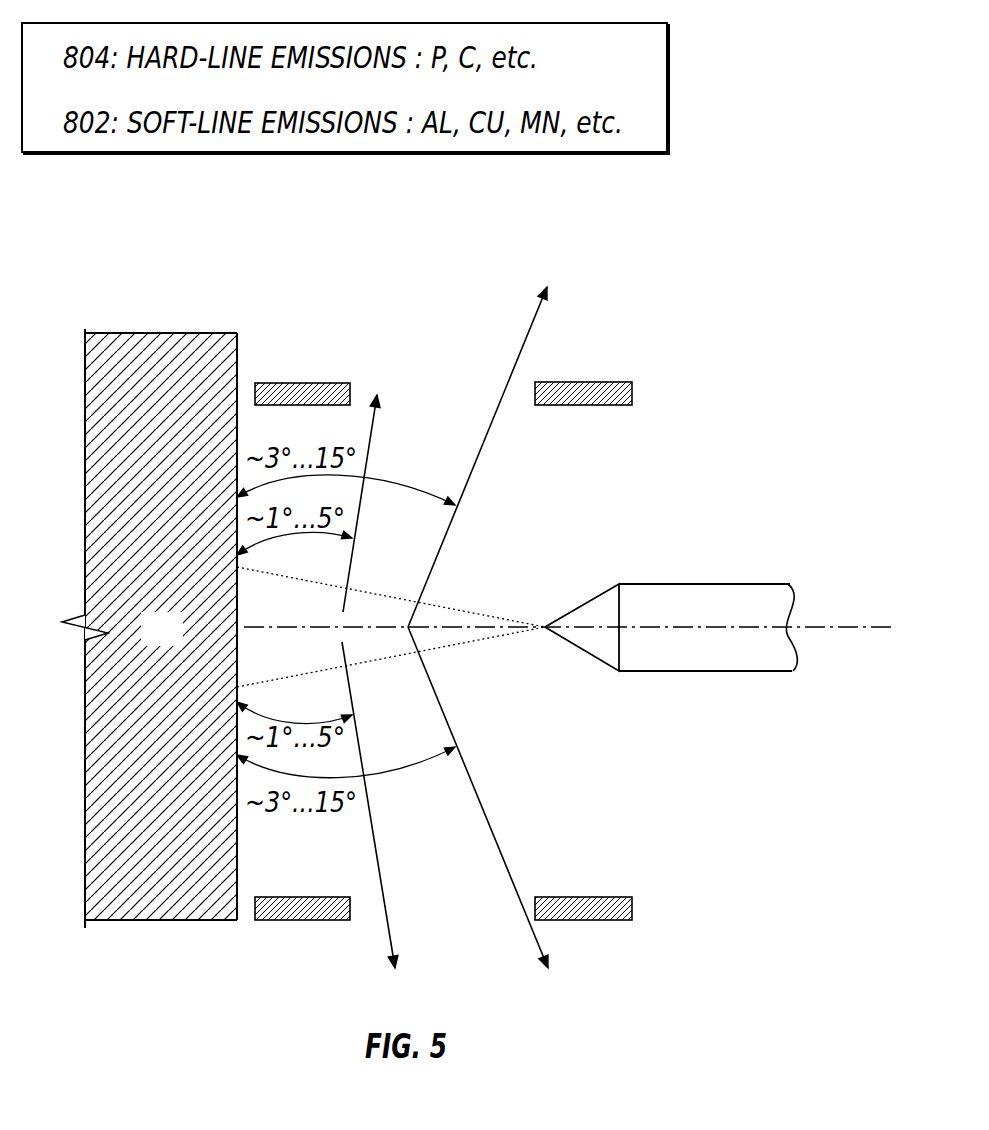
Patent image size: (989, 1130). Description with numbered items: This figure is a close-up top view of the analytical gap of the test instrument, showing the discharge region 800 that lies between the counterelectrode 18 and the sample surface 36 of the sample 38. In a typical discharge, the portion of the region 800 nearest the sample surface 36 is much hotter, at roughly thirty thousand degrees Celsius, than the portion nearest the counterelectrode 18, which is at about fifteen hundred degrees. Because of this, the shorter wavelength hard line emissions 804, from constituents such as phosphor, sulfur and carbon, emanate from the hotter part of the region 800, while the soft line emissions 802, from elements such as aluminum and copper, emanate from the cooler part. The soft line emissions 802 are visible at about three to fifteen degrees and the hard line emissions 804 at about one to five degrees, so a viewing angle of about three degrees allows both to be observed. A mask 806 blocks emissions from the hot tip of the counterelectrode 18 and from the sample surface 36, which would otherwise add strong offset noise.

The counterelectrode 18 is at (733, 595).
The sample surface 36 is at (238, 346).
The workpiece material 38 is at (179, 641).
The discharge region 800 is at (488, 638).
The soft line emissions 802 is at (540, 318).
The hard line emissions 804 is at (377, 418).
The mask 806 is at (300, 382).